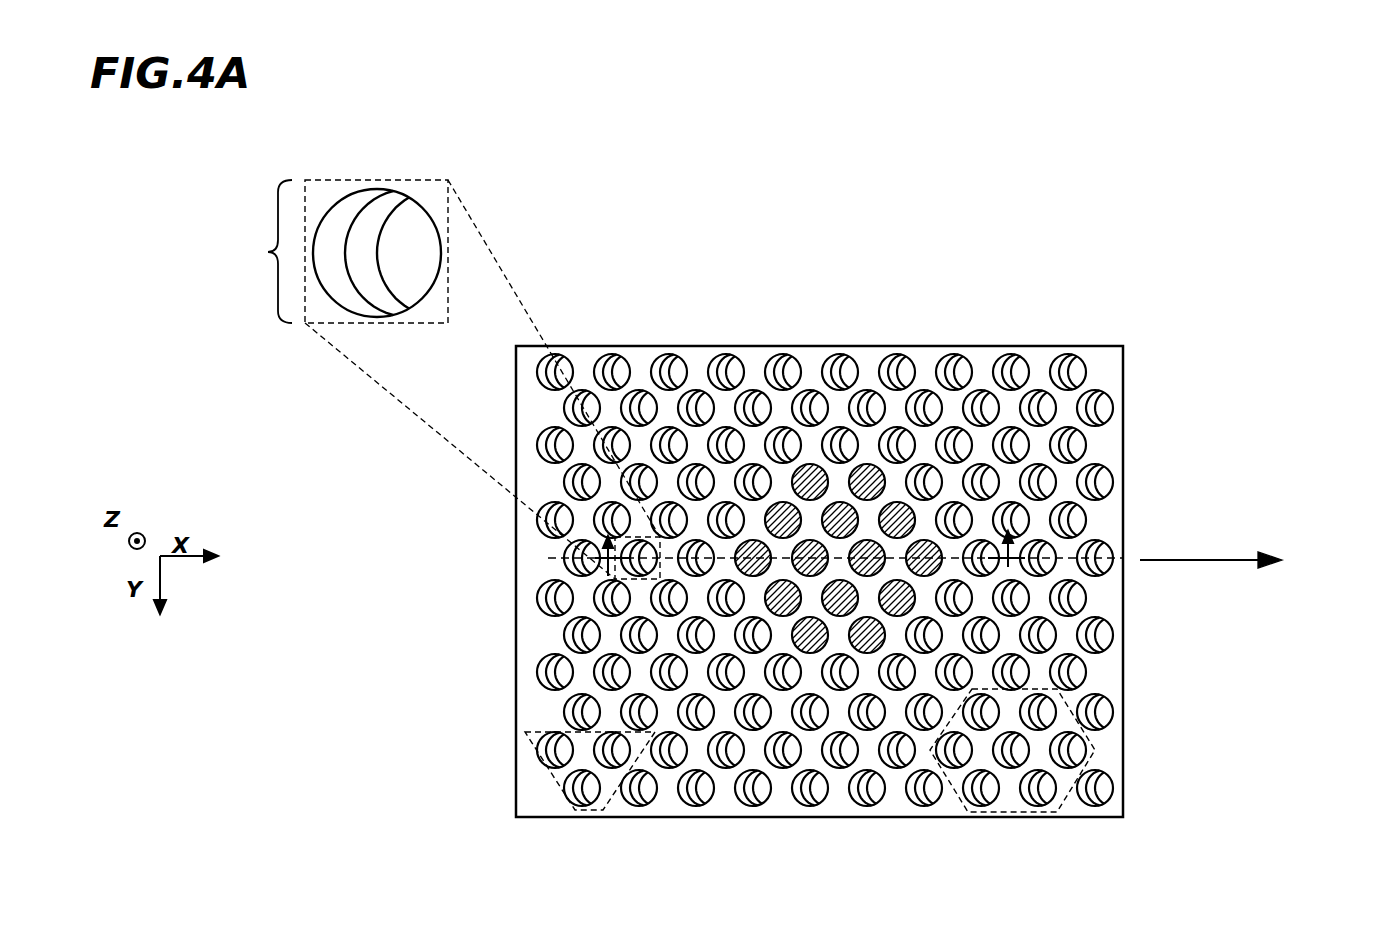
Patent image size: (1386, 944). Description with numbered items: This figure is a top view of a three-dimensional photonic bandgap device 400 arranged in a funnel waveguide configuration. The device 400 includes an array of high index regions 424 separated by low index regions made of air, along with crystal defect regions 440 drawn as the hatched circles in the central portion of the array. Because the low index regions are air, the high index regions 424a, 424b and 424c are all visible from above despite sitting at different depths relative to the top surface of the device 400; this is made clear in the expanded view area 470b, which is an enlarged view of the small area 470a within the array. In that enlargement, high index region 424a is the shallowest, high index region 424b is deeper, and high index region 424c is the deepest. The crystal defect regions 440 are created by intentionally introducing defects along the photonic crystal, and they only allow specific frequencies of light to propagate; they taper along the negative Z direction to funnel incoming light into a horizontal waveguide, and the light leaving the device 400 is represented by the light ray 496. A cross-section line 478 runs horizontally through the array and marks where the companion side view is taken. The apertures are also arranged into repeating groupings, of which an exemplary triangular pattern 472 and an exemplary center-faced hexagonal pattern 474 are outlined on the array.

The 3D photonic bandgap device 400 is at (1273, 188).
The high index regions 424 is at (592, 350).
The high index region 424a is at (418, 223).
The high index region 424b is at (370, 230).
The high index region 424c is at (330, 237).
The crystal defect regions 440 is at (775, 505).
The area 470a is at (615, 579).
The expanded view area 470b is at (322, 251).
The triangular pattern 472 is at (555, 793).
The center-faced hexagonal pattern 474 is at (1017, 790).
The cross-section line 478 is at (1010, 552).
The light ray 496 is at (1237, 560).